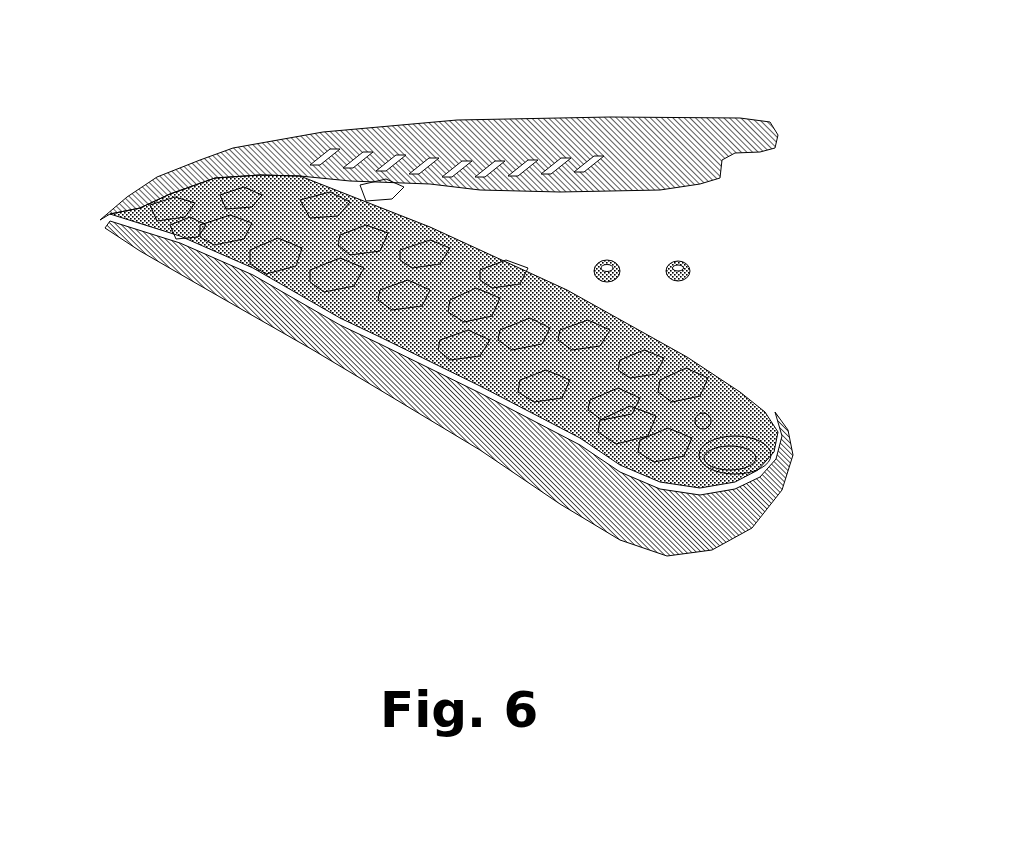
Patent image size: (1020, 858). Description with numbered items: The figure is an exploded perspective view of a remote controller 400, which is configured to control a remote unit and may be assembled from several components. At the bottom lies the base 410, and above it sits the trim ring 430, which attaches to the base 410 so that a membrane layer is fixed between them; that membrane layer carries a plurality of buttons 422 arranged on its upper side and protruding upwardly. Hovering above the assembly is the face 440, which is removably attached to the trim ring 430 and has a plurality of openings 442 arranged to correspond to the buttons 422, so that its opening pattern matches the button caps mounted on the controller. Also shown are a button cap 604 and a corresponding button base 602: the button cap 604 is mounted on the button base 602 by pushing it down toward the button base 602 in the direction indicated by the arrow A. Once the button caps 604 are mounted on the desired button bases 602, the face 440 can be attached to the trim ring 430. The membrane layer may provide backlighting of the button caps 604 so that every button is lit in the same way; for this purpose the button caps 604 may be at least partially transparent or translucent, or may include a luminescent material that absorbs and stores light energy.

The remote controller 400 is at (466, 293).
The base 410 is at (262, 300).
The trim ring 430 is at (263, 277).
The buttons 422 is at (413, 327).
The face 440 is at (439, 125).
The openings 442 is at (584, 142).
The button base 602 is at (613, 388).
The button cap 604 is at (667, 284).
The arrow A is at (613, 328).